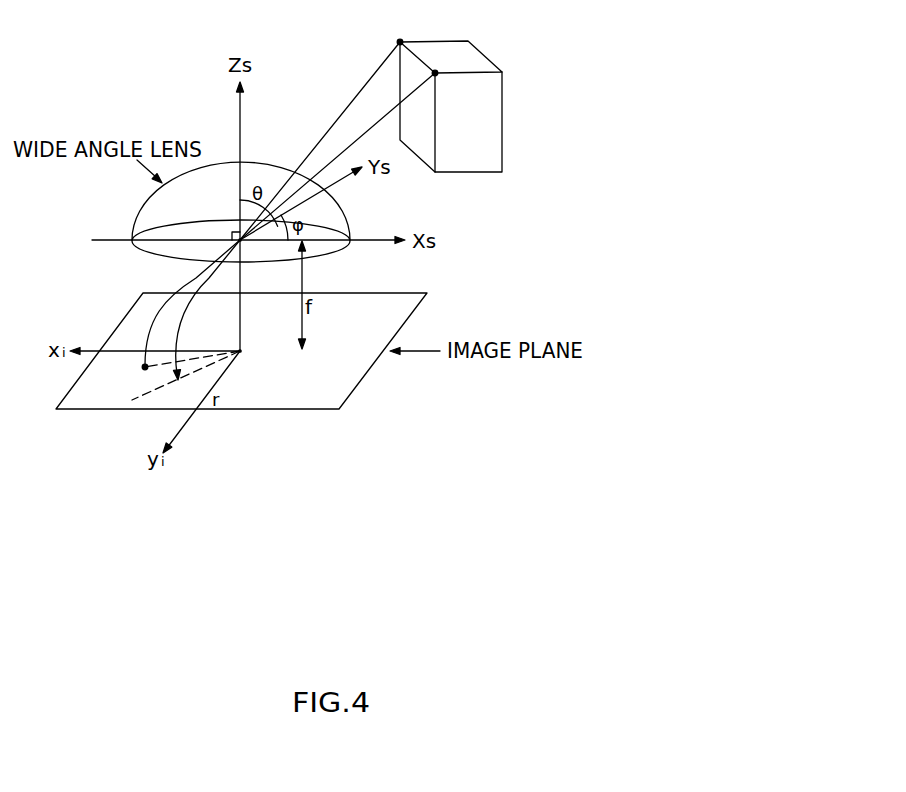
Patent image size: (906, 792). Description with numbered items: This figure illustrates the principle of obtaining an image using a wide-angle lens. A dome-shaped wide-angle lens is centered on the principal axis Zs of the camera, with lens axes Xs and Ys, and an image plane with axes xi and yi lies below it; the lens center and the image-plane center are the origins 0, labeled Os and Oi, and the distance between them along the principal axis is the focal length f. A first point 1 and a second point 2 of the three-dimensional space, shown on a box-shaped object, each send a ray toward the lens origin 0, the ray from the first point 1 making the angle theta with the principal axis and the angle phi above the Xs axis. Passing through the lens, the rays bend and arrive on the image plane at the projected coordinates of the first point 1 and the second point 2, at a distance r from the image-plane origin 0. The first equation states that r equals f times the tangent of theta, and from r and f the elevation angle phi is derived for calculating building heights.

The origin of the lens and image-plane coordinate systems (Os, Oi) 0 is at (254, 304).
The point P1 of the 3D space and its projected coordinate P' 1 is at (174, 390).
The point P2 of the 3D space and its projected coordinate P' 2 is at (131, 364).